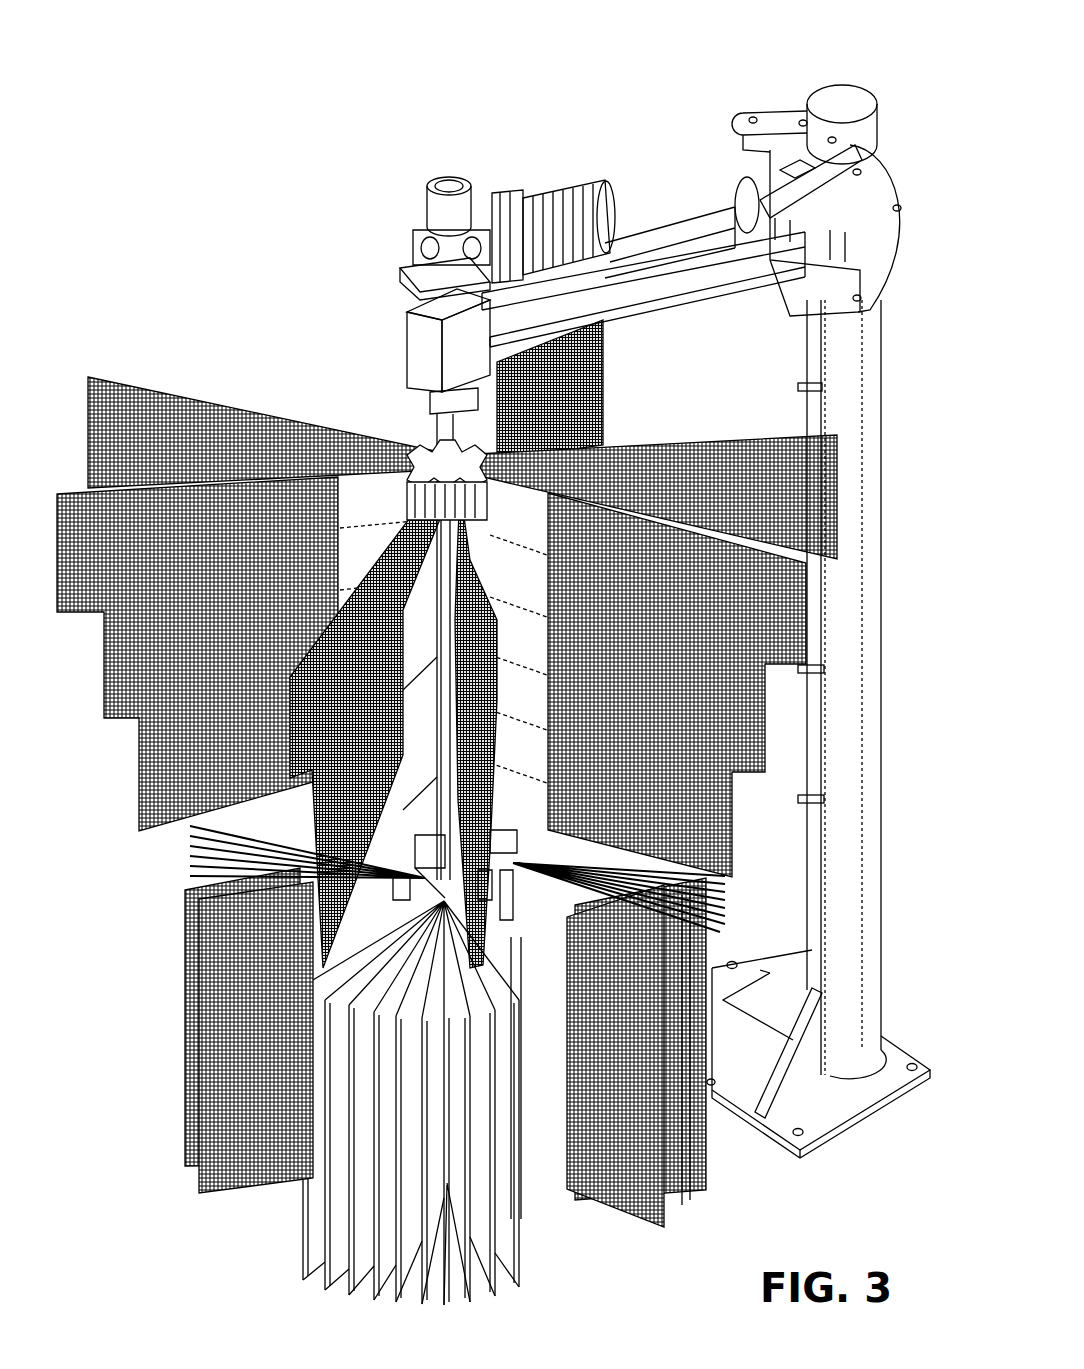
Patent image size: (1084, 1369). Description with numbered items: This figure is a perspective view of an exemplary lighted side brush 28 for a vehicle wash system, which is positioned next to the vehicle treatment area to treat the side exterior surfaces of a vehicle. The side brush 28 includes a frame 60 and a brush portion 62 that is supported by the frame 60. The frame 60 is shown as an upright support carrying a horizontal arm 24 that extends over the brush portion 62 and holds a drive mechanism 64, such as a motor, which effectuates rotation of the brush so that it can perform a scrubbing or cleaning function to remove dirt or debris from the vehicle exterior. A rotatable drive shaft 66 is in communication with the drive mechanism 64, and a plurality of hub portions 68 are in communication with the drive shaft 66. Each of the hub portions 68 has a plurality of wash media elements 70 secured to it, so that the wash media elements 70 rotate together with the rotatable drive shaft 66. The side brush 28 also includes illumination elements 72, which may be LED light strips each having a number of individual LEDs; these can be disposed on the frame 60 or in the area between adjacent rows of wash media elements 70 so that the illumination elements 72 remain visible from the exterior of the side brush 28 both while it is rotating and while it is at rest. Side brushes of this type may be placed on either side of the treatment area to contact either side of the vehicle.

The side brush 28 is at (621, 113).
The support arm 24 is at (670, 240).
The drive mechanism 64 is at (580, 196).
The rotatable drive shaft 66 is at (442, 420).
The hub portions 68 is at (407, 452).
The illumination elements 72 is at (412, 462).
The wash media elements 70 is at (80, 507).
The frame 60 is at (887, 392).
The brush portion 62 is at (127, 865).